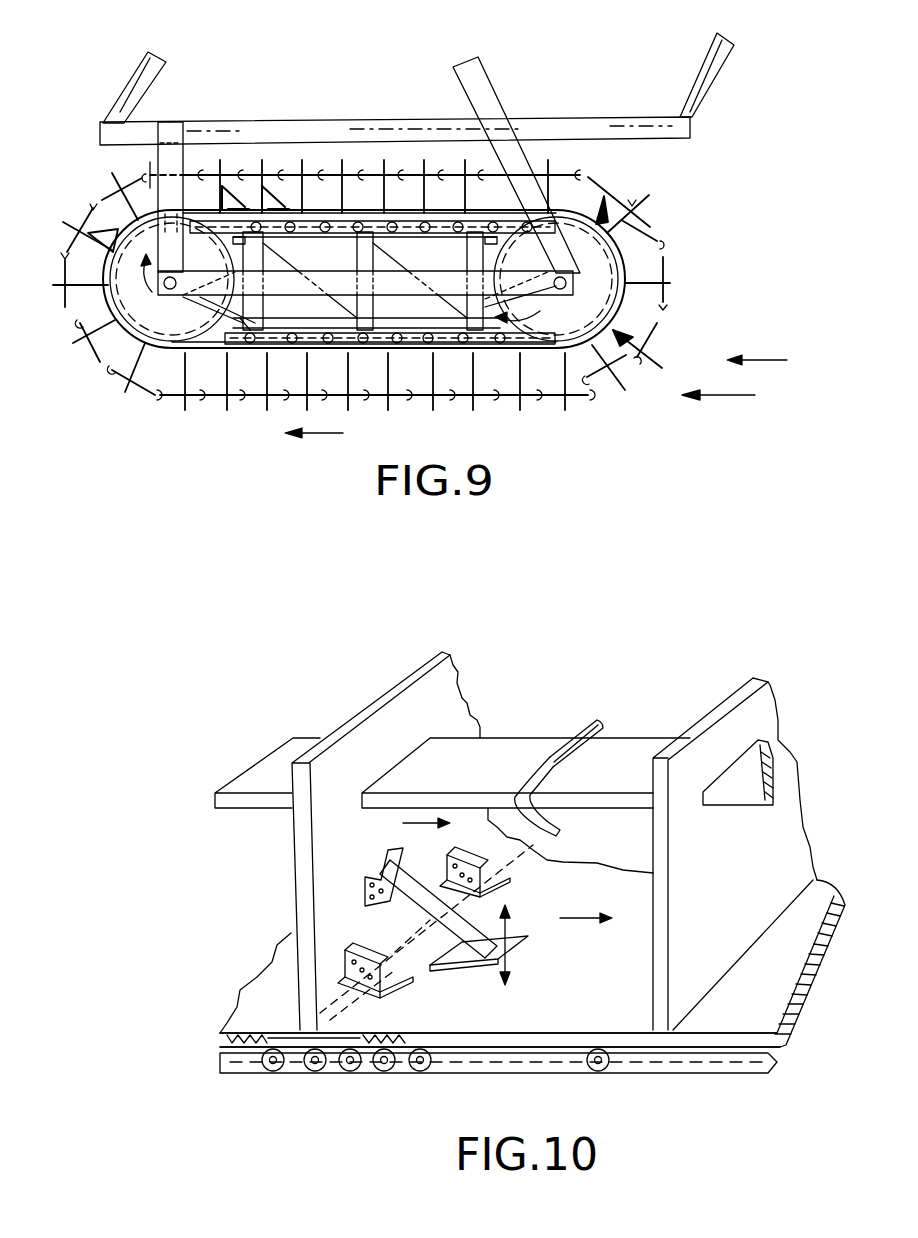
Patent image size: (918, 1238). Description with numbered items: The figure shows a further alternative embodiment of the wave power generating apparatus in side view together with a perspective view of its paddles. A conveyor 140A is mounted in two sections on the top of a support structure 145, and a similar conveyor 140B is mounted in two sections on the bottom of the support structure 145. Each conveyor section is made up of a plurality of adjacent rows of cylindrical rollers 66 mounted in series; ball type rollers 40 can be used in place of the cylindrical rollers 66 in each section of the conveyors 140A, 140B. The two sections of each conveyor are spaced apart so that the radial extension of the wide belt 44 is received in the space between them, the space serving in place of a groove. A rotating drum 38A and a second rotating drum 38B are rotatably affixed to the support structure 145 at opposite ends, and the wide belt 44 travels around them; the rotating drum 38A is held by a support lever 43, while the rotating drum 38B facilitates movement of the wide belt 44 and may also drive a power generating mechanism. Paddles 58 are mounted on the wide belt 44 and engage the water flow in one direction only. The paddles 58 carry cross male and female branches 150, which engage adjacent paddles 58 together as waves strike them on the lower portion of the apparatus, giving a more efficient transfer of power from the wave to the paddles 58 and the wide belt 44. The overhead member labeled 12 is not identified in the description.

In FIG. 9, the support bar 12 is at (123, 147).
In FIG. 9, the support lever 43 is at (495, 98).
In FIG. 9, the wide belt 44 is at (573, 210).
In FIG. 10, the wide belt 44 is at (333, 1063).
In FIG. 9, the rotating drum 38A is at (597, 293).
In FIG. 9, the second rotating drum 38B is at (143, 302).
In FIG. 9, the support structure 145 is at (293, 290).
In FIG. 9, the conveyor 140A is at (401, 243).
In FIG. 10, the conveyor 140A is at (558, 1078).
In FIG. 9, the conveyor 140B is at (418, 344).
In FIG. 10, the conveyor 140B is at (708, 1077).
In FIG. 9, the cylindrical rollers 66 is at (429, 243).
In FIG. 10, the cylindrical rollers 66 is at (469, 1091).
In FIG. 9, the ball type rollers 40 is at (457, 217).
In FIG. 10, the ball type rollers 40 is at (368, 1067).
In FIG. 9, the paddles 58 is at (650, 223).
In FIG. 10, the paddles 58 is at (417, 665).
In FIG. 9, the cross male and female branches 150 is at (668, 270).
In FIG. 10, the cross male and female branches 150 is at (278, 755).